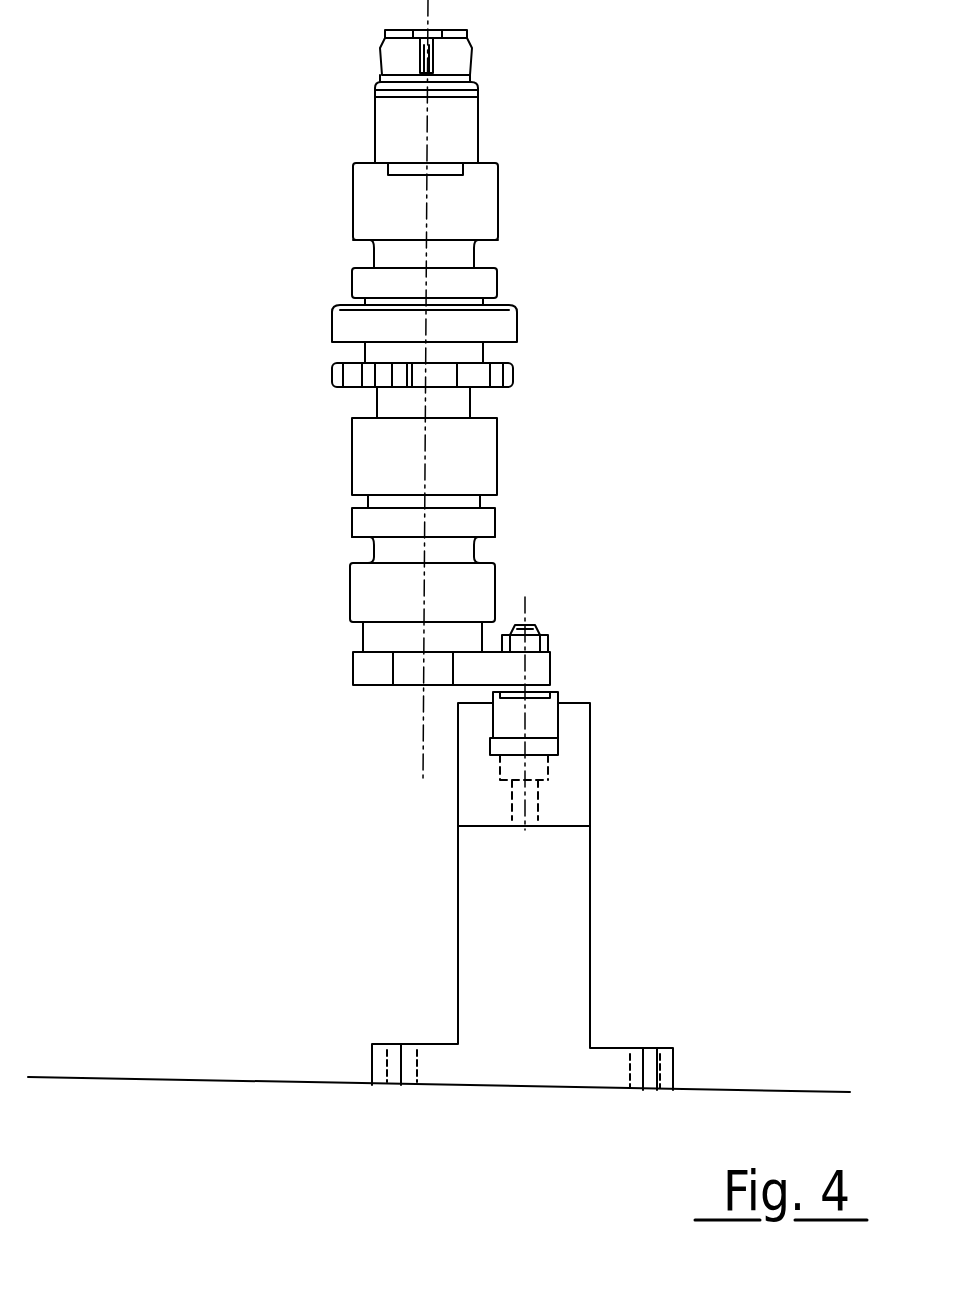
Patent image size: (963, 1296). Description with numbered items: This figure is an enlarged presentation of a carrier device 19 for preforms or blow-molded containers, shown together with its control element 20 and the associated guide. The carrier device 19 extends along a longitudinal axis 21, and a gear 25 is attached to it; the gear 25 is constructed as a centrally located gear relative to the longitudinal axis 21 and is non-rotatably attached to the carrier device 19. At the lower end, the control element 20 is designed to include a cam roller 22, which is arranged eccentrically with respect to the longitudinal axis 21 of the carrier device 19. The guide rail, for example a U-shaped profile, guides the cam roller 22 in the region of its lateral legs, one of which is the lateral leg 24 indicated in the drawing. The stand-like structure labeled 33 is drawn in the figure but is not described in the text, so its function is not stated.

The carrier device 19 is at (478, 130).
The gear 25 is at (518, 375).
The longitudinal axis 21 is at (427, 457).
The control element 20 is at (547, 672).
The cam roller 22 is at (538, 717).
The receptacle of stand 33 is at (572, 732).
The lateral leg 24 is at (468, 730).